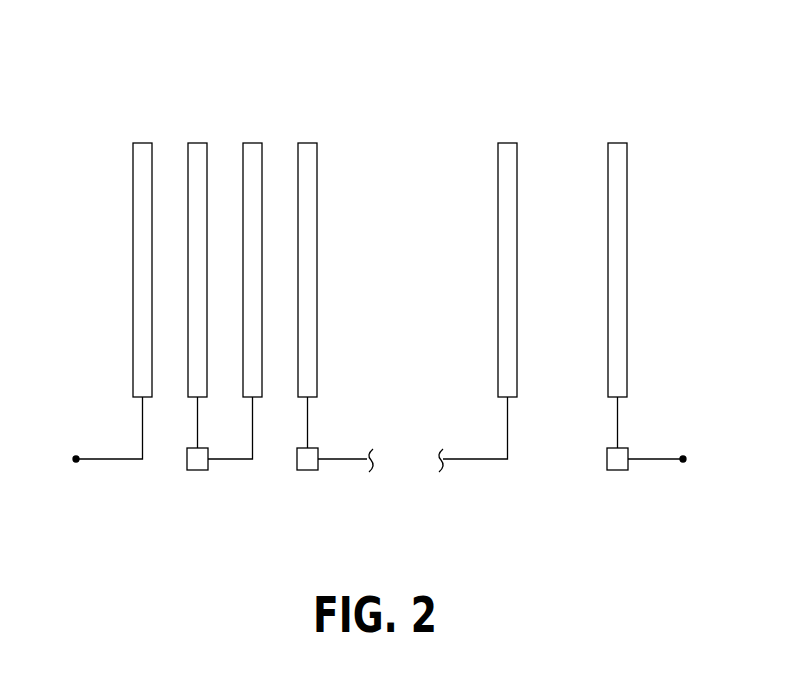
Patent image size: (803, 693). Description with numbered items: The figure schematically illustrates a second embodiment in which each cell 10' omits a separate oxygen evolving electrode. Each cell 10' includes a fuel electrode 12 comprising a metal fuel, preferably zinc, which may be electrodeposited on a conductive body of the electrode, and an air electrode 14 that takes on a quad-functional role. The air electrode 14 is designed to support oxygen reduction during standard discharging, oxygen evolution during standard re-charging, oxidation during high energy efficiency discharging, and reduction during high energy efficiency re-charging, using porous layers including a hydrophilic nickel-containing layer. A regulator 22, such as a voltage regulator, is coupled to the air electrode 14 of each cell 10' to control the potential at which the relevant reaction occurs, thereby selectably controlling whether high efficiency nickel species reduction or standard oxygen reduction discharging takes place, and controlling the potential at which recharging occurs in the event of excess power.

The cell 10' is at (380, 288).
The fuel electrode 12 is at (133, 221).
The air electrode 14 is at (188, 204).
The regulator 22 is at (195, 470).